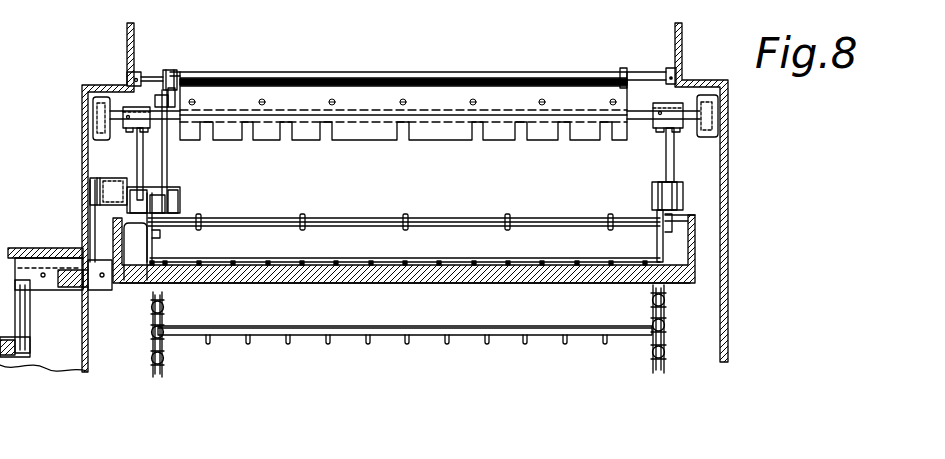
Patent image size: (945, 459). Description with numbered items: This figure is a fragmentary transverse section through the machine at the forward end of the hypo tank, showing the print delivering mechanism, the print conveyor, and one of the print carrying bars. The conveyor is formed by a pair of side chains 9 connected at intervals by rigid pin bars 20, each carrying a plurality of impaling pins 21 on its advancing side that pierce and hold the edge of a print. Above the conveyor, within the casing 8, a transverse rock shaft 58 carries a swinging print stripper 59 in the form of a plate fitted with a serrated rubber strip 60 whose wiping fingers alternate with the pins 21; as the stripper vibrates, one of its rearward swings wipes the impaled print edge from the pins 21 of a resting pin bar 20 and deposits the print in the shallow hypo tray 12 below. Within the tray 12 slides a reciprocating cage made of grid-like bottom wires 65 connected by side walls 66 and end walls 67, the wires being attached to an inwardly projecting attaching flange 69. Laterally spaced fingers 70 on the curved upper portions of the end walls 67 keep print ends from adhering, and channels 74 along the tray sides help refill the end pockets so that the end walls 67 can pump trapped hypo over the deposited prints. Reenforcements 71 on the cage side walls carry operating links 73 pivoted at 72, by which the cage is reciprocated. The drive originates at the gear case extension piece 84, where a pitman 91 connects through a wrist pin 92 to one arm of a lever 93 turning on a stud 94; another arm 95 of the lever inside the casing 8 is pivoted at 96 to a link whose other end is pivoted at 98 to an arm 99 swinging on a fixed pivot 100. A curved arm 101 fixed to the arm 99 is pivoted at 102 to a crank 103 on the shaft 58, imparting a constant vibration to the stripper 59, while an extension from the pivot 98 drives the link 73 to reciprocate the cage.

The casing 8 is at (84, 142).
The side chains 9 is at (165, 315).
The hypo tank or tray 12 is at (298, 284).
The pin bars 20 is at (432, 328).
The impaling pins 21 is at (328, 343).
The rock shaft 58 is at (645, 72).
The print stripper 59 is at (418, 97).
The serrated rubber strip 60 is at (460, 130).
The bottom wires 65 is at (505, 262).
The side walls 66 is at (662, 249).
The end walls 67 is at (528, 235).
The attaching flange 69 is at (340, 260).
The fingers 70 is at (408, 216).
The reenforcements 71 is at (152, 236).
The pivot 72 is at (405, 294).
The operating links 73 is at (683, 196).
The channels 74 is at (136, 267).
The gear case extension piece 84 is at (27, 240).
The pitman 91 is at (25, 327).
The wrist pin 92 is at (32, 350).
The lever 93 is at (28, 305).
The stud 94 is at (73, 258).
The lever arm 95 is at (93, 213).
The pivot 96 is at (108, 178).
The pivot 98 is at (180, 205).
The arm 99 is at (143, 165).
The fixed pivot 100 is at (642, 128).
The curved arm 101 is at (167, 175).
The pivot 102 is at (176, 100).
The crank 103 is at (134, 52).